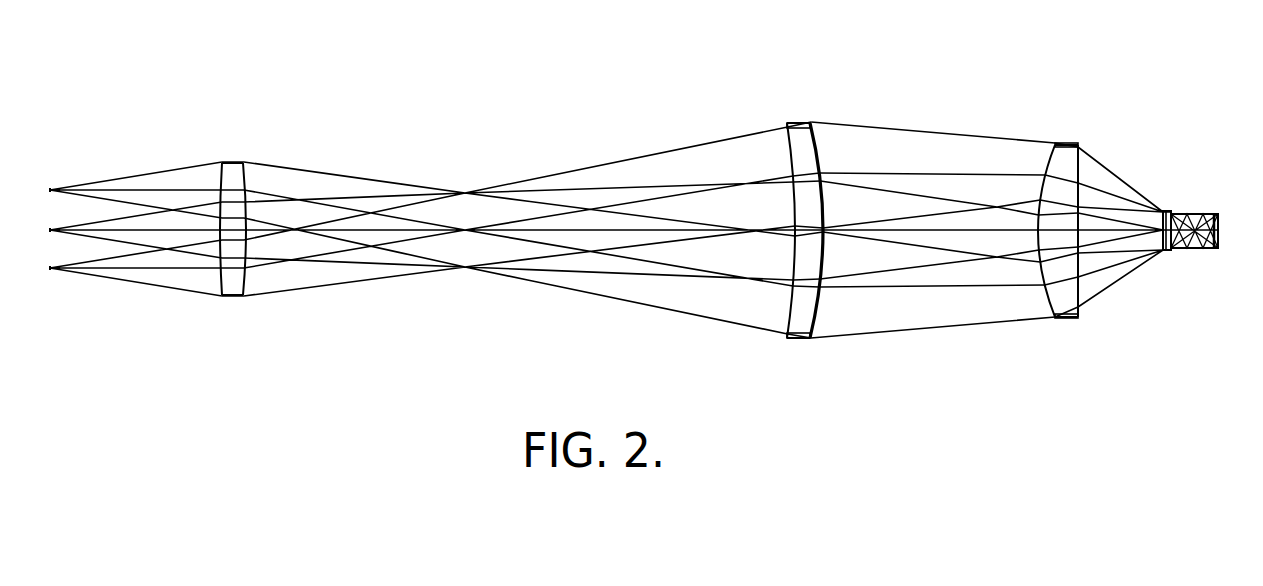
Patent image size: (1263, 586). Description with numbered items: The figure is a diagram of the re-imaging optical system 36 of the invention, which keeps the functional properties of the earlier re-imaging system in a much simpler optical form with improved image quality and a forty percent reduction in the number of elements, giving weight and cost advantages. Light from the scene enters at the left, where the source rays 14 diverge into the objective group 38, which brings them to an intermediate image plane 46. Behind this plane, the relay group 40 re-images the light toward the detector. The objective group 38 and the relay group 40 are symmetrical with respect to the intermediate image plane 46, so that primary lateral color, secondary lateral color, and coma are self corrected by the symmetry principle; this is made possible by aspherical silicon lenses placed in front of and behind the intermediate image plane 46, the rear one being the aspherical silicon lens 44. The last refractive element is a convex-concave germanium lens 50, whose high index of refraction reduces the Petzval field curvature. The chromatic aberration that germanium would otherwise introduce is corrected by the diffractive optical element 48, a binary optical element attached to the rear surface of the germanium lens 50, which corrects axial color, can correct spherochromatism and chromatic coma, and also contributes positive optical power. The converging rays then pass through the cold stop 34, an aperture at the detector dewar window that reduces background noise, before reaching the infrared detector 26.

The light sources 14 is at (50, 180).
The infrared detector 26 is at (1218, 217).
The cold stop 34 is at (1167, 212).
The re-imaging optical system 36 is at (146, 133).
The objective group 38 is at (232, 131).
The relay group 40 is at (966, 173).
The aspherical silicon lens 44 is at (805, 124).
The intermediate image plane 46 is at (467, 166).
The diffractive optical element 48 is at (1082, 295).
The germanium lens 50 is at (1080, 145).